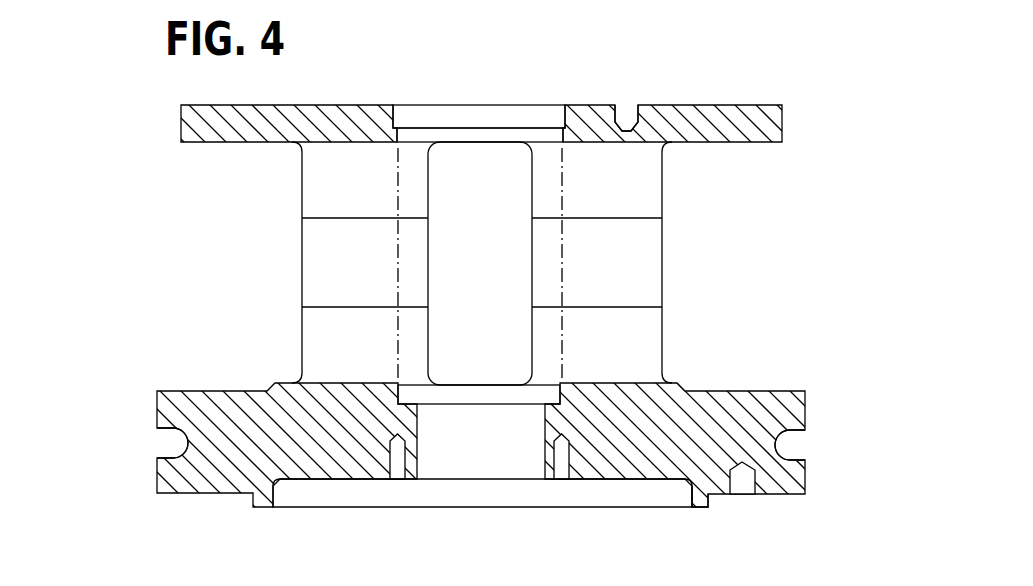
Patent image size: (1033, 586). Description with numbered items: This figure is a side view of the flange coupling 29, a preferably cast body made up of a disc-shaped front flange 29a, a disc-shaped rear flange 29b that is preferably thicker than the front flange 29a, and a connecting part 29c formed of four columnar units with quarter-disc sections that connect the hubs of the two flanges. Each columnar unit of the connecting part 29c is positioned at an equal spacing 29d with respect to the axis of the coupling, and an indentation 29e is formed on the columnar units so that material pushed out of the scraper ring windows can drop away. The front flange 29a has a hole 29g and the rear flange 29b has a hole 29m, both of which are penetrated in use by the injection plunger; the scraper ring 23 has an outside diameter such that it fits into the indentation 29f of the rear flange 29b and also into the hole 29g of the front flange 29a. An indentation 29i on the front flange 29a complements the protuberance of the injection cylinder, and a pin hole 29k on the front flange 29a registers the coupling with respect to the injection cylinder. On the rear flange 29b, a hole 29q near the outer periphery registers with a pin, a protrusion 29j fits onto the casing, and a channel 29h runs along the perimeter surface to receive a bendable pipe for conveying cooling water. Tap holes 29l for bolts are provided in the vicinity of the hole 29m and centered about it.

The scraper ring 23 is at (393, 264).
The flange coupling 29 is at (772, 323).
The front flange 29a is at (772, 124).
The rear flange 29b is at (797, 487).
The connecting part 29c is at (657, 353).
The spacing 29d is at (485, 153).
The indentation 29e is at (645, 275).
The indentation 29f is at (557, 391).
The hole 29g is at (562, 134).
The channel 29h is at (168, 442).
The indentation 29i is at (552, 118).
The protrusion 29j is at (702, 507).
The pin hole 29k is at (630, 110).
The tap holes 29l is at (555, 482).
The hole 29m is at (417, 458).
The hole 29q is at (746, 487).